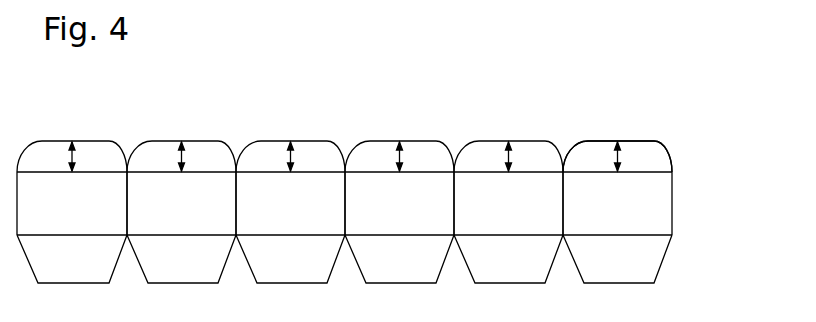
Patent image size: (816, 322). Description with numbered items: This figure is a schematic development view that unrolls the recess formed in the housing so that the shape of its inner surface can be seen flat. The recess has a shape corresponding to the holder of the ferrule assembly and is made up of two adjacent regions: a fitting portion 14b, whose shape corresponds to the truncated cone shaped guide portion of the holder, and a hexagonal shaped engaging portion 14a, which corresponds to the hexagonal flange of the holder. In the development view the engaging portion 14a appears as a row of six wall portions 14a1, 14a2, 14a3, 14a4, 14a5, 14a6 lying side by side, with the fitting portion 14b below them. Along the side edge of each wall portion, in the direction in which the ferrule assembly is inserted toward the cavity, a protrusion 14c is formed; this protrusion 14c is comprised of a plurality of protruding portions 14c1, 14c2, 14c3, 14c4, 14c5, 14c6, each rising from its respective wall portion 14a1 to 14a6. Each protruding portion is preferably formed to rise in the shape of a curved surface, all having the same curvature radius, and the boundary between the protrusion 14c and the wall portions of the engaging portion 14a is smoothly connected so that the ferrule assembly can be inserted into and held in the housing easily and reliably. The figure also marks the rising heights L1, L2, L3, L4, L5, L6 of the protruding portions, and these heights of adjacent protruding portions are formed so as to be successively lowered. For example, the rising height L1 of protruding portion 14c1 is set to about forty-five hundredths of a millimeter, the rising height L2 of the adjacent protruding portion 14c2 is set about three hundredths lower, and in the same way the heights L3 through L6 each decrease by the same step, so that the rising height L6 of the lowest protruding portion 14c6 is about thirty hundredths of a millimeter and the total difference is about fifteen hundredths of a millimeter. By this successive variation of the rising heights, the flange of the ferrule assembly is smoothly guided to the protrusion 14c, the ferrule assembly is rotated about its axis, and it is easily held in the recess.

The engaging portion 14a is at (672, 198).
The fitting portion 14b is at (663, 260).
The protrusion 14c is at (665, 154).
The wall portion 14a1 is at (72, 203).
The protruding portion 14c1 is at (55, 140).
The rising height L1 is at (86, 157).
The wall portion 14a2 is at (181, 203).
The protruding portion 14c2 is at (163, 157).
The rising height L2 is at (196, 157).
The wall portion 14a3 is at (290, 203).
The protruding portion 14c3 is at (273, 150).
The rising height L3 is at (305, 157).
The wall portion 14a4 is at (399, 203).
The protruding portion 14c4 is at (375, 155).
The rising height L4 is at (414, 157).
The wall portion 14a5 is at (508, 203).
The protruding portion 14c5 is at (485, 153).
The rising height L5 is at (523, 157).
The wall portion 14a6 is at (617, 203).
The protruding portion 14c6 is at (597, 152).
The rising height L6 is at (632, 157).